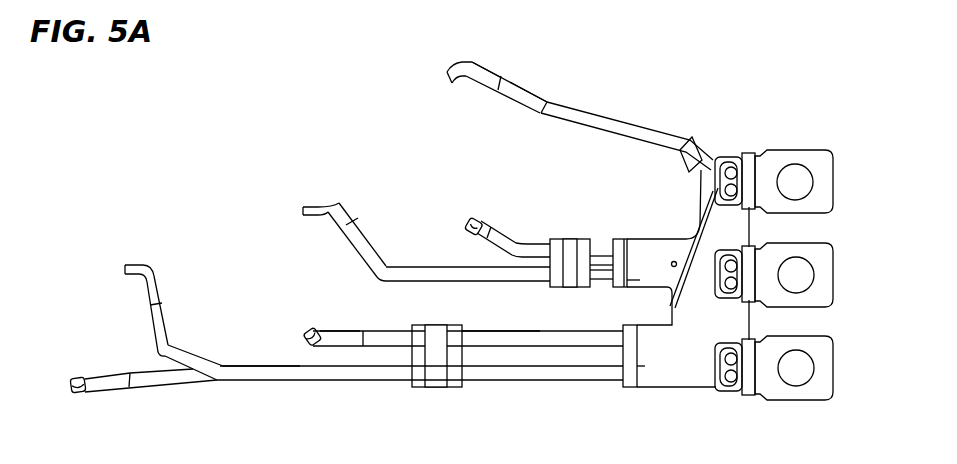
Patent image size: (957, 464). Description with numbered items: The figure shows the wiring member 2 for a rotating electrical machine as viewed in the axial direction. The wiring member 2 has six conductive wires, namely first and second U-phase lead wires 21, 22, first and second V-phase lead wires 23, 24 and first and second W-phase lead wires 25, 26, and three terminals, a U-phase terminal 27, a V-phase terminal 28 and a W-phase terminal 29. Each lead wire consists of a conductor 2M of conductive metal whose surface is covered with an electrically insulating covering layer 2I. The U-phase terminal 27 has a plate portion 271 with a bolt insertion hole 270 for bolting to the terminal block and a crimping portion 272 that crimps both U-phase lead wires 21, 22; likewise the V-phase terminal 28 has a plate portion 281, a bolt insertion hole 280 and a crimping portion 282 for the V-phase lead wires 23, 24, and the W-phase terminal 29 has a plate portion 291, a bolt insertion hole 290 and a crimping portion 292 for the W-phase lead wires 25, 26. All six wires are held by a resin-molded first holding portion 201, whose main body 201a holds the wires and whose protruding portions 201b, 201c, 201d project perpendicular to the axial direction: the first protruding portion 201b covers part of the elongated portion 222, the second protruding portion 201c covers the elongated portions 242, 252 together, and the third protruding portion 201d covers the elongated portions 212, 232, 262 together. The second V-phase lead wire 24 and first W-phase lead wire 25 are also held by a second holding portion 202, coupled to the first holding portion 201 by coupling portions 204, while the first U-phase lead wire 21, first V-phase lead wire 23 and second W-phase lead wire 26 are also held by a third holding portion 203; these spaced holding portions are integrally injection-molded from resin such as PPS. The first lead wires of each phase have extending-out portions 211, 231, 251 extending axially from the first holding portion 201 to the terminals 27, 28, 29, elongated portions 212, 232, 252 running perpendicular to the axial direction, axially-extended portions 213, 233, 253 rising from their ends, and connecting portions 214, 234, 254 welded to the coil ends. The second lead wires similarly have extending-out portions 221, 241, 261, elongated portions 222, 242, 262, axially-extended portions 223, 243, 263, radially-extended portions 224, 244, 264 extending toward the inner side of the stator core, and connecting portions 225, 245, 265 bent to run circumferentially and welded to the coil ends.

The wiring member for rotating electrical machine 2 is at (830, 416).
The first U-phase lead wire 21 is at (388, 328).
The second U-phase lead wire 22 is at (497, 56).
The first V-phase lead wire 23 is at (113, 369).
The second V-phase lead wire 24 is at (341, 247).
The first W-phase lead wire 25 is at (619, 225).
The second W-phase lead wire 26 is at (157, 261).
The U-phase terminal 27 is at (844, 160).
The V-phase terminal 28 is at (844, 278).
The W-phase terminal 29 is at (844, 380).
The conductor 2M is at (490, 80).
The electrically insulating covering layer 2I is at (522, 102).
The first holding portion 201 is at (652, 381).
The main body 201a is at (735, 316).
The first protruding portion 201b is at (684, 158).
The second protruding portion 201c is at (637, 248).
The third protruding portion 201d is at (623, 387).
The second holding portion 202 is at (618, 240).
The third holding portion 203 is at (433, 376).
The coupling portions 204 is at (602, 276).
The extending-out portion 211 is at (735, 158).
The elongated portion 212 is at (547, 340).
The axially-extended portion 213 is at (316, 347).
The connecting portion 214 is at (309, 337).
The extending-out portion 221 is at (749, 155).
The elongated portion 222 is at (645, 103).
The axially-extended portion 223 is at (548, 113).
The radially-extended portion 224 is at (513, 92).
The connecting portion 225 is at (447, 72).
The extending-out portion 231 is at (728, 250).
The elongated portion 232 is at (192, 374).
The axially-extended portion 233 is at (78, 394).
The connecting portion 234 is at (77, 378).
The extending-out portion 241 is at (716, 292).
The elongated portion 242 is at (420, 267).
The axially-extended portion 243 is at (389, 266).
The radially-extended portion 244 is at (362, 251).
The connecting portion 245 is at (313, 207).
The extending-out portion 251 is at (716, 362).
The elongated portion 252 is at (521, 247).
The axially-extended portion 253 is at (479, 235).
The connecting portion 254 is at (470, 220).
The extending-out portion 261 is at (715, 388).
The elongated portion 262 is at (245, 381).
The axially-extended portion 263 is at (174, 348).
The radially-extended portion 264 is at (158, 326).
The connecting portion 265 is at (129, 265).
The bolt insertion hole 270 is at (797, 168).
The plate portion 271 is at (825, 196).
The crimping portion 272 is at (719, 158).
The bolt insertion hole 280 is at (803, 272).
The plate portion 281 is at (826, 292).
The crimping portion 282 is at (716, 262).
The bolt insertion hole 290 is at (802, 360).
The plate portion 291 is at (826, 389).
The crimping portion 292 is at (736, 392).